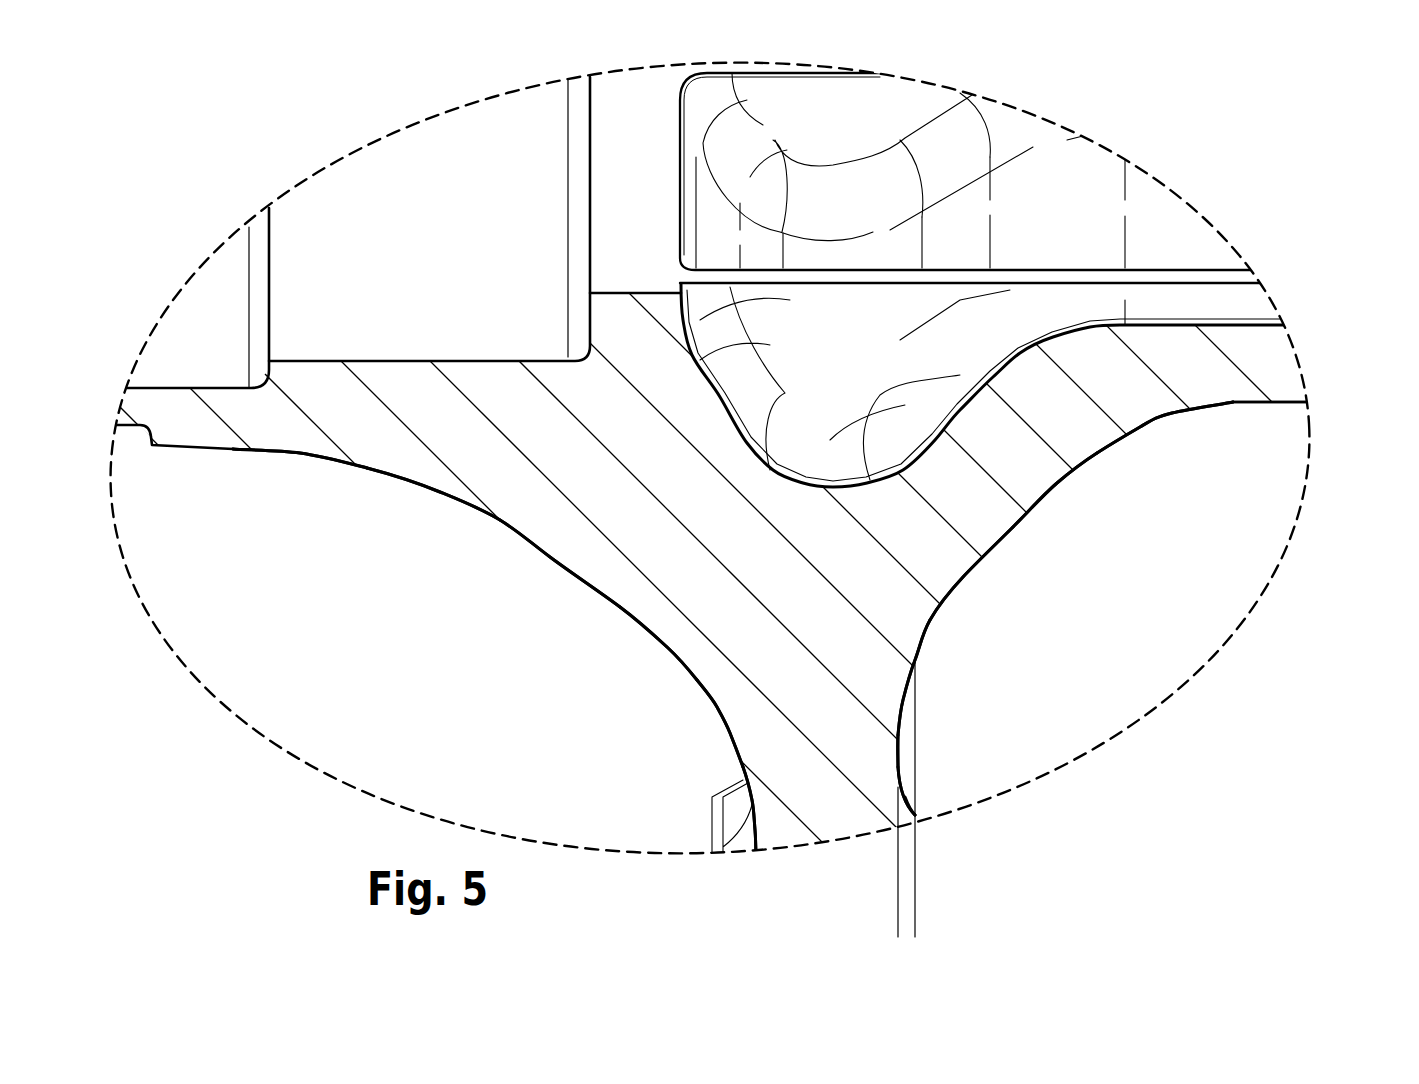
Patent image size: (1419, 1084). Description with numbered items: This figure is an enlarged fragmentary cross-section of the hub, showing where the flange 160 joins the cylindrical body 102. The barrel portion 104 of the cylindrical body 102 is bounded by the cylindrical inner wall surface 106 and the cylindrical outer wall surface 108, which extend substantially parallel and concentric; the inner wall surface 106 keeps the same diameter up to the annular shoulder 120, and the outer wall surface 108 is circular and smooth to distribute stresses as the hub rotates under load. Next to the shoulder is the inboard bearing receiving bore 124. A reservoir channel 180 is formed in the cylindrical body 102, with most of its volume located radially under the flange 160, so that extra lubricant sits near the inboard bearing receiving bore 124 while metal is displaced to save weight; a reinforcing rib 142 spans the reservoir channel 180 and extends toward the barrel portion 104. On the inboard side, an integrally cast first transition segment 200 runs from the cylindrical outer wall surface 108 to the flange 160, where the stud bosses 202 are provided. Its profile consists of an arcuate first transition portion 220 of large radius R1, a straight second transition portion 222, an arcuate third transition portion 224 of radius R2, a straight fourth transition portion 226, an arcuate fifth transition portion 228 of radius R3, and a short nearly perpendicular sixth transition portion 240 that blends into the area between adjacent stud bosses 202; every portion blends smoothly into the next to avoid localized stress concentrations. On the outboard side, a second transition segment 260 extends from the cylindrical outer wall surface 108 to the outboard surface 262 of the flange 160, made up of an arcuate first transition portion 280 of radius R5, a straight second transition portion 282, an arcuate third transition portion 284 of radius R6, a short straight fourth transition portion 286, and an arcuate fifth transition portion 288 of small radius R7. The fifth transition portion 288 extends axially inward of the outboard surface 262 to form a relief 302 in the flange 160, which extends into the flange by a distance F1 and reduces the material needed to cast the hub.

The cylindrical body 102 is at (230, 453).
The barrel portion 104 is at (1268, 372).
The cylindrical inner wall surface 106 is at (1245, 324).
The cylindrical outer wall surface 108 is at (1279, 402).
The annular shoulder 120 is at (590, 304).
The inboard bearing receiving bore 124 is at (376, 361).
The reinforcing rib 142 is at (1183, 272).
The flange 160 is at (787, 827).
The reservoir channel 180 is at (853, 358).
The first transition segment 200 is at (548, 562).
The stud boss 202 is at (735, 816).
The first transition portion 220 is at (282, 448).
The second transition portion 222 is at (510, 527).
The third transition portion 224 is at (608, 598).
The fourth transition portion 226 is at (697, 678).
The fifth transition portion 228 is at (727, 730).
The sixth transition portion 240 is at (753, 815).
The second transition segment 260 is at (1068, 490).
The outboard surface 262 is at (917, 811).
The first transition portion 280 is at (1150, 417).
The second transition portion 282 is at (1053, 488).
The third transition portion 284 is at (960, 577).
The fourth transition portion 286 is at (897, 760).
The fifth transition portion 288 is at (910, 793).
The relief 302 is at (900, 751).
The radius of first transition portion R1 is at (362, 482).
The radius of third transition portion R2 is at (609, 617).
The radius of fifth transition portion R3 is at (711, 733).
The radius of first transition portion of second segment R5 is at (1177, 428).
The radius of third transition portion of second segment R6 is at (946, 630).
The radius of fifth transition portion of second segment R7 is at (927, 784).
The relief distance F1 is at (813, 918).